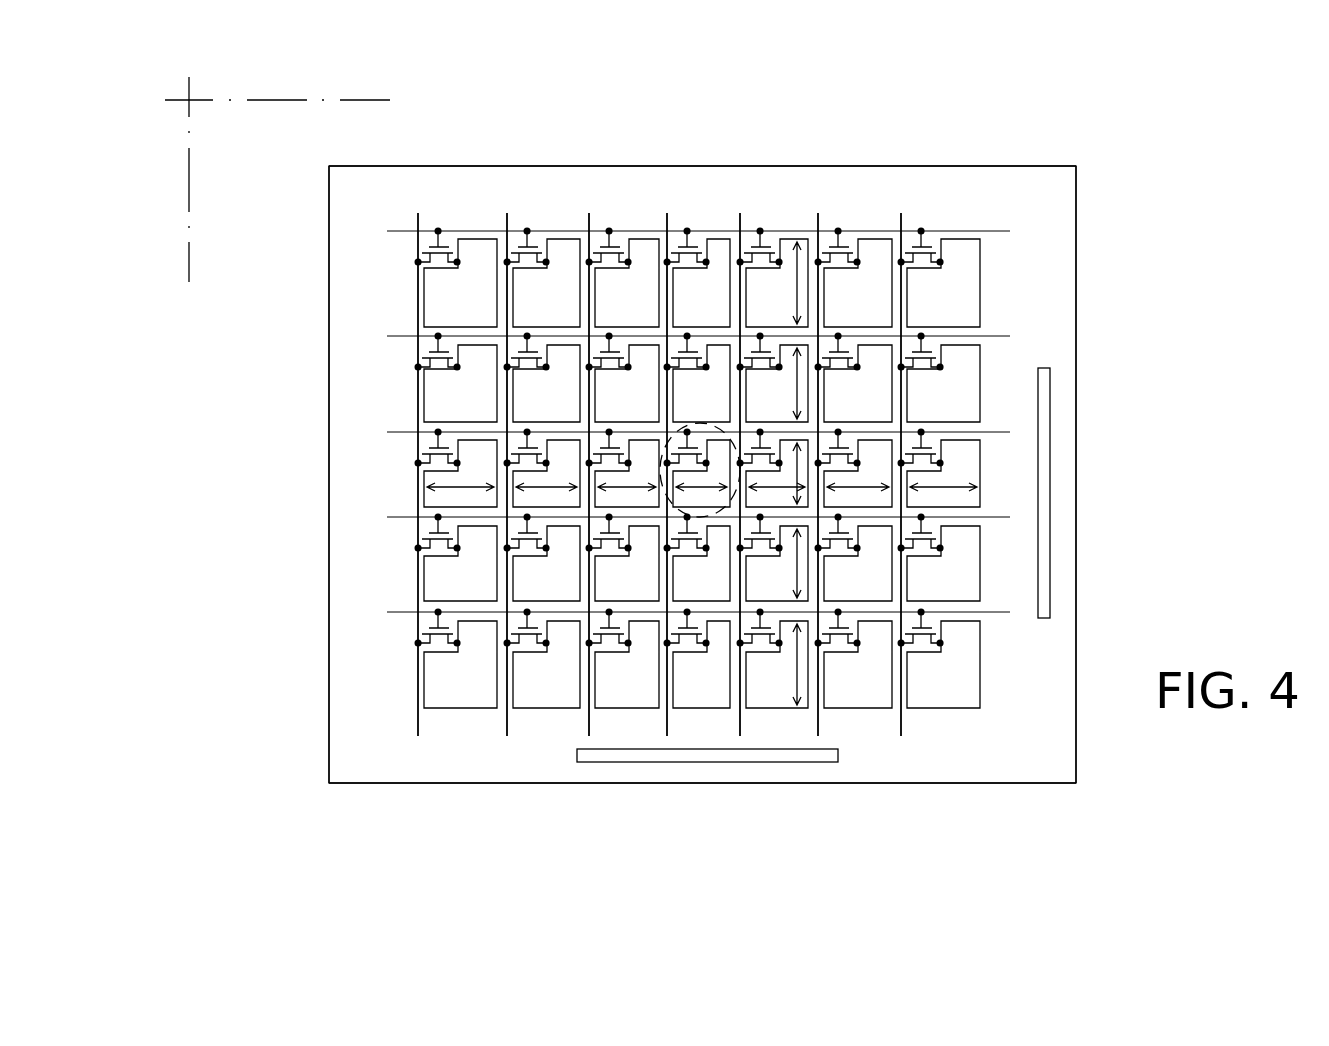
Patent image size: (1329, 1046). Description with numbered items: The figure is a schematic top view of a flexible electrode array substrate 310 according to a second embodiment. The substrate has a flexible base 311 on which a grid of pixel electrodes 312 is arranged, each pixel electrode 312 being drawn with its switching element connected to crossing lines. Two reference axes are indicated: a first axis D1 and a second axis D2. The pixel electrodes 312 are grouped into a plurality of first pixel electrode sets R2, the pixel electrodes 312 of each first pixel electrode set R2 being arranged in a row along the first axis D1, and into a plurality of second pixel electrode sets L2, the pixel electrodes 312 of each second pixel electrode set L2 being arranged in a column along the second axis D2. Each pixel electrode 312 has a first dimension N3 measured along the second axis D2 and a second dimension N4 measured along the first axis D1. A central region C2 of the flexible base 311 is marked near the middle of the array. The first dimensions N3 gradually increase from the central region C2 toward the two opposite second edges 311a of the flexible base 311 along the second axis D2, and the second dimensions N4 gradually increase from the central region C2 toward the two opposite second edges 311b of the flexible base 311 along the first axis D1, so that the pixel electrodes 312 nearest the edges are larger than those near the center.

The flexible electrode array substrate 310 is at (1177, 786).
The flexible base 311 is at (723, 400).
The second edges 311a is at (578, 158).
The second edges 311b is at (318, 384).
The pixel electrode 312 is at (973, 262).
The first pixel electrode set R2 is at (376, 289).
The second pixel electrode set L2 is at (471, 140).
The central region C2 is at (662, 426).
The first axis D1 is at (373, 101).
The second axis D2 is at (188, 258).
The first dimension N3 is at (797, 390).
The second dimension N4 is at (452, 488).